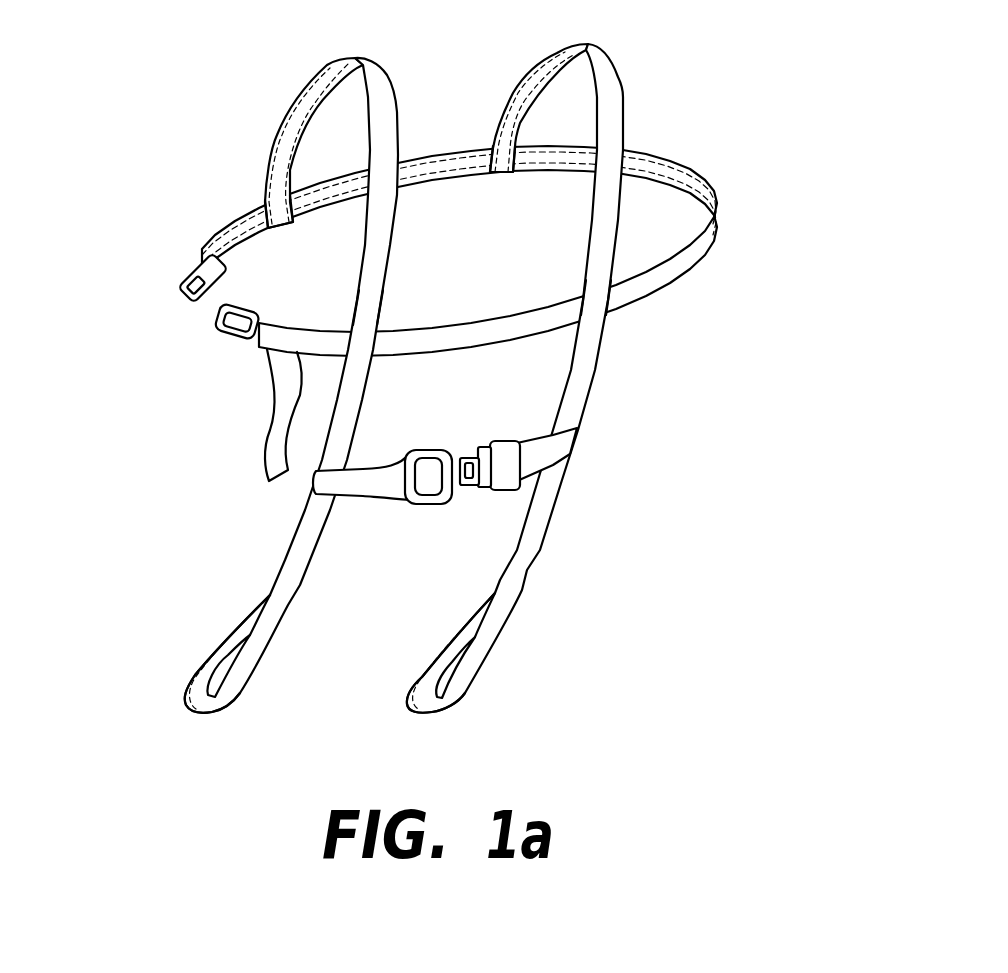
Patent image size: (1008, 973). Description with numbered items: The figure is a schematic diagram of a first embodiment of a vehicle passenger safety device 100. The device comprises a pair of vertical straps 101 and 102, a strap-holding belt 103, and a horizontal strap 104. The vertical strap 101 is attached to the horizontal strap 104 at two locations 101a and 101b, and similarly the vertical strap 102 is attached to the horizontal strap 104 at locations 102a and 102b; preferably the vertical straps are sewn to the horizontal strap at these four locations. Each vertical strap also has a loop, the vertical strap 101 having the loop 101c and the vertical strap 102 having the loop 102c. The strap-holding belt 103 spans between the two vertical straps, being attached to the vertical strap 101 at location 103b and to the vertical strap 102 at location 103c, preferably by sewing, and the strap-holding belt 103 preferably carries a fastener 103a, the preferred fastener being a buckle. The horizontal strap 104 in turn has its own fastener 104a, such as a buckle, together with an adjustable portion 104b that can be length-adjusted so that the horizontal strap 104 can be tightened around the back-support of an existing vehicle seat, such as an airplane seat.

The vehicle passenger safety device 100 is at (767, 104).
The vertical strap 101 is at (338, 60).
The attachment location 101a is at (265, 210).
The attachment location 101b is at (381, 332).
The loop 101c is at (183, 695).
The vertical strap 102 is at (592, 48).
The attachment location 102a is at (490, 147).
The attachment location 102b is at (607, 312).
The loop 102c is at (483, 675).
The strap-holding belt 103 is at (383, 497).
The fastener 103a is at (490, 445).
The attachment location 103b is at (314, 474).
The attachment location 103c is at (578, 440).
The horizontal strap 104 is at (716, 236).
The fastener 104a is at (190, 297).
The adjustable portion 104b is at (262, 447).